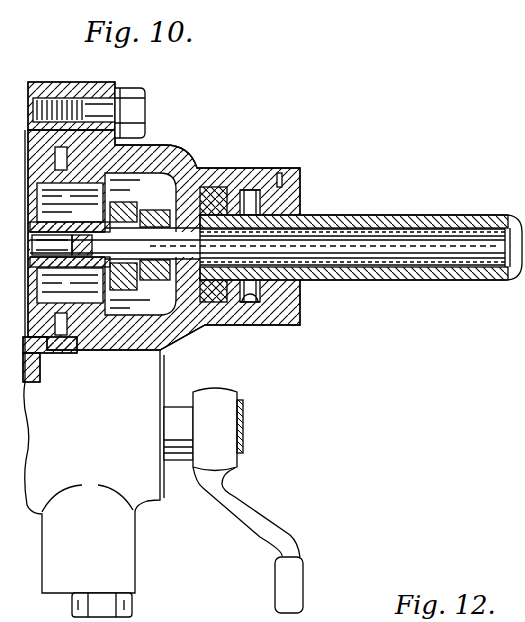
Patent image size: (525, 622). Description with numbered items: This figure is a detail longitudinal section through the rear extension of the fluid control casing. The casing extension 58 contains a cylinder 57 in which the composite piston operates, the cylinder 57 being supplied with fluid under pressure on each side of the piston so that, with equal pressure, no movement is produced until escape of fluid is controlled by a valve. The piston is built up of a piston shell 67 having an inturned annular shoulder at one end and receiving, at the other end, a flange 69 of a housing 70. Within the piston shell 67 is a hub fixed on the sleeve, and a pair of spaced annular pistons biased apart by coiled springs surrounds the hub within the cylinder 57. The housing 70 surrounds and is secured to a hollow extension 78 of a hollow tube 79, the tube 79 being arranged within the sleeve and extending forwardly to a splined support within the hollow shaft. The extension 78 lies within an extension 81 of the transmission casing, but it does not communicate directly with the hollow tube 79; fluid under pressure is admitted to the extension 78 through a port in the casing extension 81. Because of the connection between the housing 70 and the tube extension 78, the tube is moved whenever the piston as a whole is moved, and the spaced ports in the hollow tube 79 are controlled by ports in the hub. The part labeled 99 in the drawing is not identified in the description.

The flange 57 is at (63, 358).
The cap nut 58 is at (53, 86).
The bolt 67 is at (90, 110).
The frame bracket 69 is at (42, 387).
The housing 70 is at (185, 162).
The shaft 78 is at (378, 262).
The bearing 79 is at (54, 272).
The tube 81 is at (377, 215).
The hub 99 is at (117, 295).